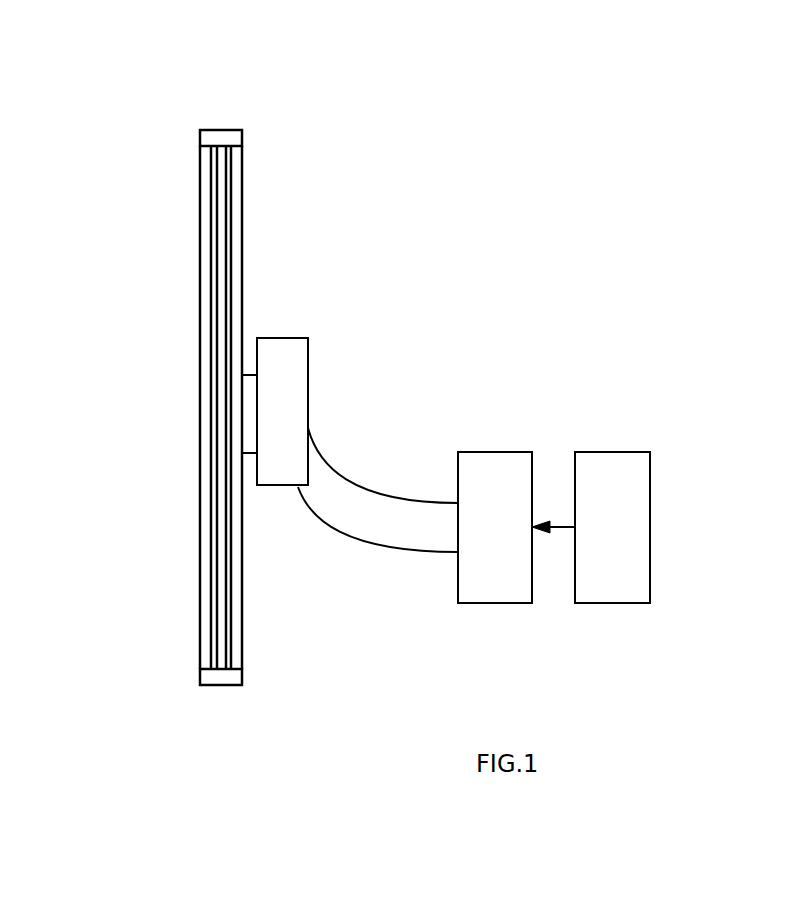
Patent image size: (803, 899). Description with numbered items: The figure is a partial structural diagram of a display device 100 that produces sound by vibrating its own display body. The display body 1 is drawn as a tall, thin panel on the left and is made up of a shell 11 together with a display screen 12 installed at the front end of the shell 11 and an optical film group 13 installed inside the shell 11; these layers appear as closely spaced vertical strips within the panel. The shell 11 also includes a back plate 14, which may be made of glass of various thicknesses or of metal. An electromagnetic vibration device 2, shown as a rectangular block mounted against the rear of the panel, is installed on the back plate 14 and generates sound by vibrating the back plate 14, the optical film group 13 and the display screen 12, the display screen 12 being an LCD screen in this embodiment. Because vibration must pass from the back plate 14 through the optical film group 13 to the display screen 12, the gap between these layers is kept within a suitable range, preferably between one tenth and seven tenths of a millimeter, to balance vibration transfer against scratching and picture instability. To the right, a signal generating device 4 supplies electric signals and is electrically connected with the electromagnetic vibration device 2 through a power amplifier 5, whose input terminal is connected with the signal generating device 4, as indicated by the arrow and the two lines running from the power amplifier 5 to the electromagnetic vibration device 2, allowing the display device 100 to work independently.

The display device 100 is at (454, 48).
The display body 1 is at (105, 123).
The shell 11 is at (212, 138).
The display screen 12 is at (205, 257).
The optical film group 13 is at (220, 372).
The back plate 14 is at (236, 518).
The electromagnetic vibration device 2 is at (308, 338).
The power amplifier 5 is at (532, 452).
The signal generating device 4 is at (650, 452).